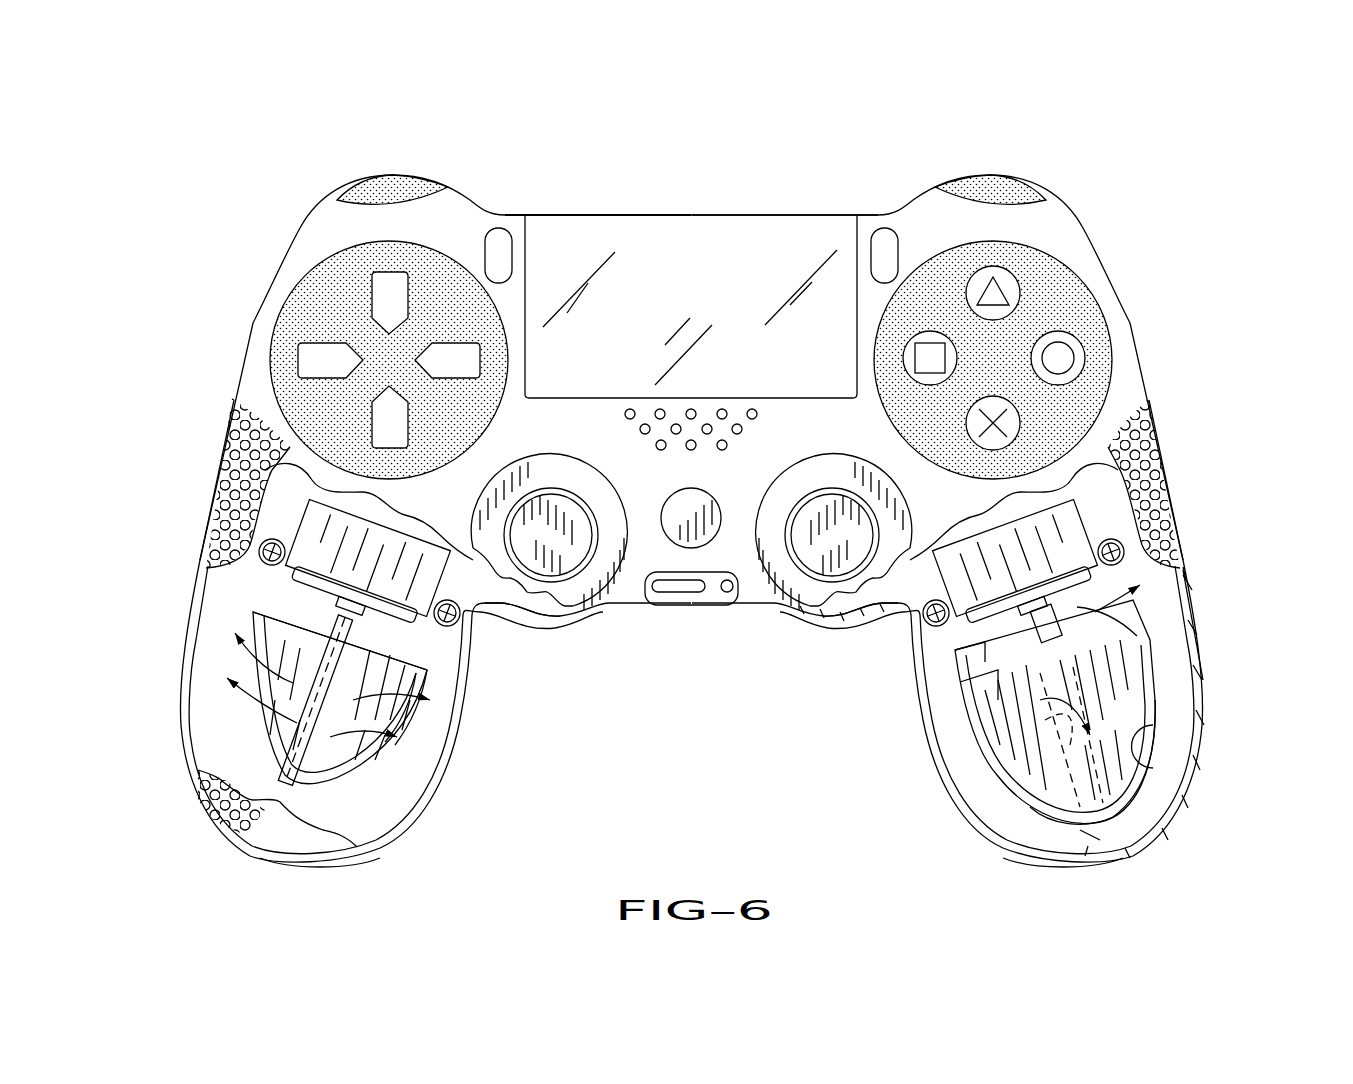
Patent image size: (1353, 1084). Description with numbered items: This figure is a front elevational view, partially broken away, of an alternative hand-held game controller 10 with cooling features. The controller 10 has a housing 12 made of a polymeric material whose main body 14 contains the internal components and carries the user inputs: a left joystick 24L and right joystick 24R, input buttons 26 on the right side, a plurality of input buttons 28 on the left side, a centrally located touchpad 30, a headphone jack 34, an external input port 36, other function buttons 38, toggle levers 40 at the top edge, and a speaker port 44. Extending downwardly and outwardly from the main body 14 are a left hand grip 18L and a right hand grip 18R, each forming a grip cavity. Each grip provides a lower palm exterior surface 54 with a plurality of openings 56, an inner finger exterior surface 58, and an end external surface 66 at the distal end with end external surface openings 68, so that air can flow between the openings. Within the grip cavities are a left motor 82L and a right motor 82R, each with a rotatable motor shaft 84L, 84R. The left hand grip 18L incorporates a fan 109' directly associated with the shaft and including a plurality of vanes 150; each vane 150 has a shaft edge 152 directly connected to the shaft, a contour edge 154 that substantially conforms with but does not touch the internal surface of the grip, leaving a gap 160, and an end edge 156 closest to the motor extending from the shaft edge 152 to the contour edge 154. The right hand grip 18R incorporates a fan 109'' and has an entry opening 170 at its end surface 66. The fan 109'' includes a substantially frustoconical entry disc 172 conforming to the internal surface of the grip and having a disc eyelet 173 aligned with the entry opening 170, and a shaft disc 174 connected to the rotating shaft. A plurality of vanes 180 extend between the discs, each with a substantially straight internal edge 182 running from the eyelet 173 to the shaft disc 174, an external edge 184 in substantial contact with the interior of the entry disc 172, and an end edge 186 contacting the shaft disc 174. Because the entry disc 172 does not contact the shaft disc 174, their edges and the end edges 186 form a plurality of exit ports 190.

The hand-held game controller 10 is at (165, 185).
The housing 12 is at (1155, 352).
The main body 14 is at (875, 215).
The left hand grip 18L is at (480, 665).
The right hand grip 18R is at (935, 758).
The left joystick 24L is at (550, 535).
The right joystick 24R is at (833, 535).
The input buttons 26 is at (1100, 312).
The input buttons 28 is at (290, 312).
The touchpad 30 is at (711, 268).
The headphone jack 34 is at (730, 585).
The external input port 36 is at (655, 585).
The function buttons 38 is at (495, 250).
The toggle levers 40 is at (382, 196).
The speaker port 44 is at (712, 405).
The lower palm exterior surface 54 is at (205, 562).
The openings 56 is at (232, 462).
The inner finger exterior surface 58 is at (483, 630).
The end external surface 66 is at (310, 857).
The end external surface openings 68 is at (267, 827).
The left motor 82L is at (320, 548).
The right motor 82R is at (1045, 540).
The left motor shaft 84L is at (330, 593).
The right motor shaft 84R is at (1100, 645).
The fan 109' is at (357, 740).
The fan 109'' is at (994, 783).
The vanes 150 is at (383, 767).
The shaft edge 152 is at (310, 717).
The contour edge 154 is at (428, 700).
The end edge 156 is at (300, 615).
The gap 160 is at (433, 728).
The entry opening 170 is at (1135, 853).
The entry disc 172 is at (1152, 668).
The disc eyelet 173 is at (1105, 828).
The shaft disc 174 is at (1184, 571).
The vanes 180 is at (1118, 713).
The internal edge 182 is at (1200, 697).
The external edge 184 is at (1172, 785).
The end edge 186 is at (948, 702).
The exit ports 190 is at (950, 660).